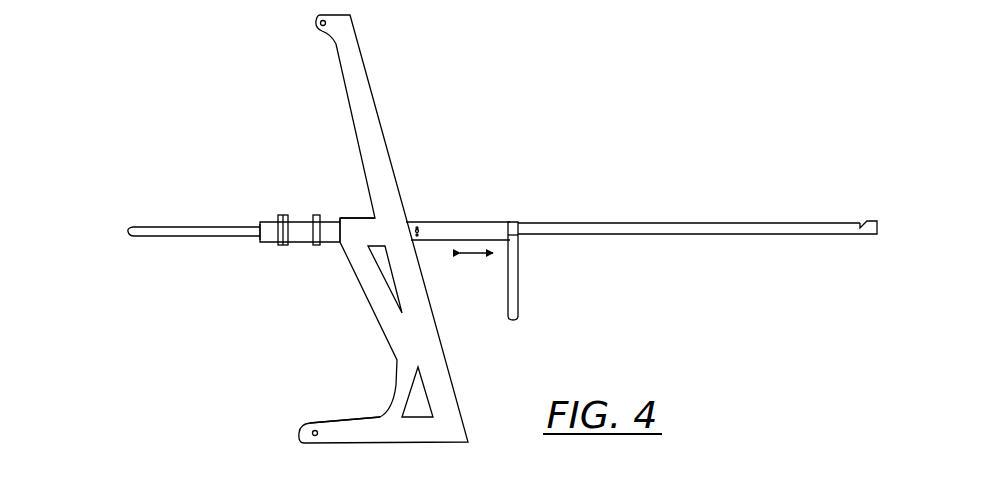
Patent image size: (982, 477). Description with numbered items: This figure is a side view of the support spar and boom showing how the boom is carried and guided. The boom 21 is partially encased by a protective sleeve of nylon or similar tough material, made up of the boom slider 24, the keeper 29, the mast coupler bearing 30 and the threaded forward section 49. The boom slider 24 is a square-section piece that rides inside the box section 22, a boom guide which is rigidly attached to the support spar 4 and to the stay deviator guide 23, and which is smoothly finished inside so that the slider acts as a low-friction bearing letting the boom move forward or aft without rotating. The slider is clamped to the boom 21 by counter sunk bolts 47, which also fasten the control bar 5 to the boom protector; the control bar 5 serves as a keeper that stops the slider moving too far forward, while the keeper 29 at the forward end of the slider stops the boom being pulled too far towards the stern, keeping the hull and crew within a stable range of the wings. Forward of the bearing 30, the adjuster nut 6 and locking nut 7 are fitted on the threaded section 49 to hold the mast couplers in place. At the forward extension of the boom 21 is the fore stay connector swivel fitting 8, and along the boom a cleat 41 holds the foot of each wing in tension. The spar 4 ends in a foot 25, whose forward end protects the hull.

The support spar 4 is at (383, 229).
The control bar 5 is at (532, 271).
The adjuster nut 6 is at (272, 212).
The locking nut 7 is at (272, 212).
The fore stay connector swivel fitting 8 is at (182, 215).
The boom 21 is at (689, 212).
The box section (boom guide) 22 is at (366, 229).
The stay deviator guide 23 is at (392, 390).
The boom slider 24 is at (458, 218).
The foot 25 is at (345, 447).
The keeper 29 is at (318, 212).
The mast coupler bearing 30 is at (300, 247).
The cleat 41 is at (859, 209).
The counter sunk bolts 47 is at (415, 213).
The threaded forward section 49 is at (268, 246).